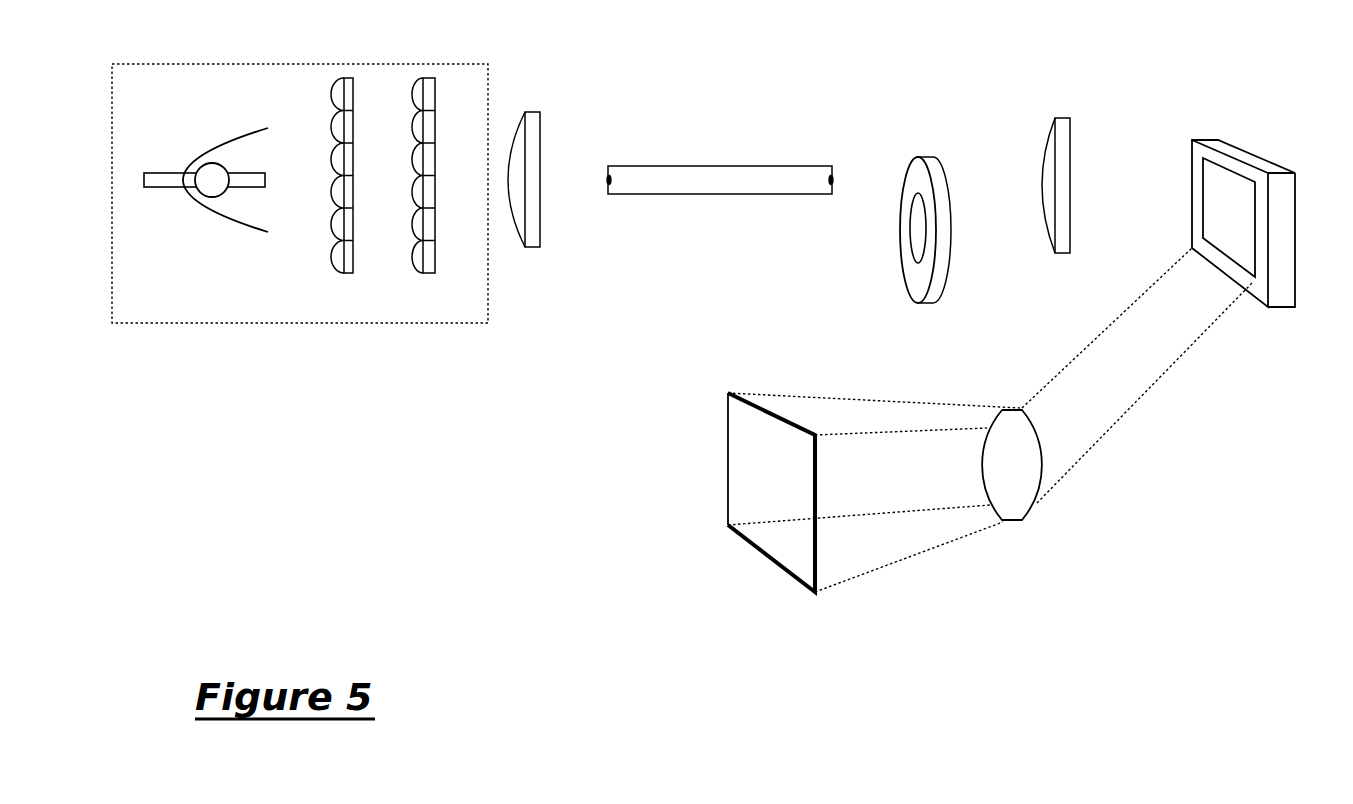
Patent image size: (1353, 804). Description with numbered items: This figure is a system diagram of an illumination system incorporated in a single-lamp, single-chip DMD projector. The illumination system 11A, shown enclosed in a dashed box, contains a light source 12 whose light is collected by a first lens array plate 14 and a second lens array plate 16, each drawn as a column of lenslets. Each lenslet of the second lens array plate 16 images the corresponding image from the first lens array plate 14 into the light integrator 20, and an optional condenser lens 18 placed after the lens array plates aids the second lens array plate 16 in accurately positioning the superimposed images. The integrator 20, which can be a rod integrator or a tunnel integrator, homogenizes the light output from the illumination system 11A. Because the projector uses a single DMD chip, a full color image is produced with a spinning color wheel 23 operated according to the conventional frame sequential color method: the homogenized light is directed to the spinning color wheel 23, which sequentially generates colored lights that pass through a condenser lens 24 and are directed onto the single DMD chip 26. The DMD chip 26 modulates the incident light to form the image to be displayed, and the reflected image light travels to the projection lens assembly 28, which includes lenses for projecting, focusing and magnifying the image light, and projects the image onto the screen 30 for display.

The illumination system 11A is at (288, 63).
The light source 12 is at (220, 225).
The first lens array plate 14 is at (353, 266).
The second lens array plate 16 is at (435, 266).
The condenser lens 18 is at (531, 247).
The light integrator 20 is at (698, 194).
The spinning color wheel 23 is at (944, 287).
The color separating device 24 is at (1060, 253).
The DMD chip 26 is at (1283, 307).
The projection lens assembly 28 is at (1005, 522).
The screen 30 is at (755, 552).